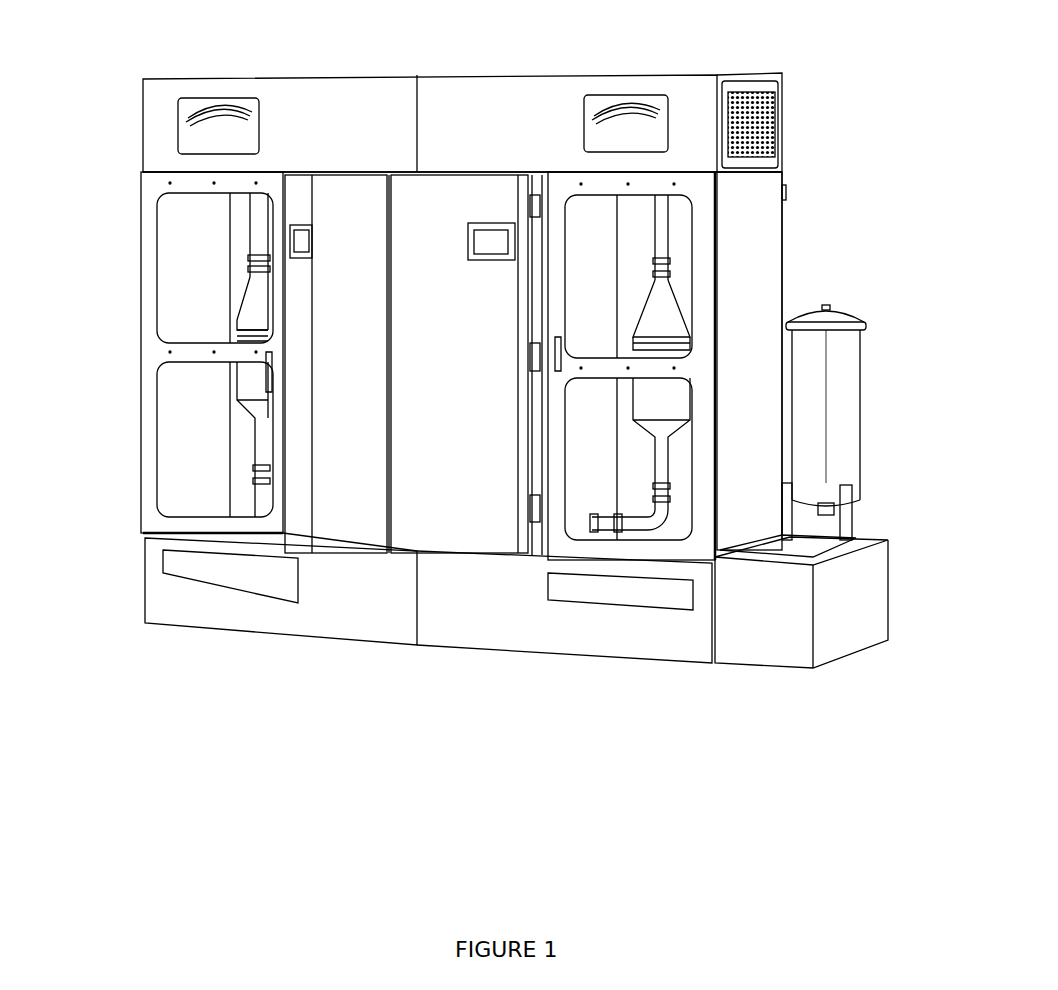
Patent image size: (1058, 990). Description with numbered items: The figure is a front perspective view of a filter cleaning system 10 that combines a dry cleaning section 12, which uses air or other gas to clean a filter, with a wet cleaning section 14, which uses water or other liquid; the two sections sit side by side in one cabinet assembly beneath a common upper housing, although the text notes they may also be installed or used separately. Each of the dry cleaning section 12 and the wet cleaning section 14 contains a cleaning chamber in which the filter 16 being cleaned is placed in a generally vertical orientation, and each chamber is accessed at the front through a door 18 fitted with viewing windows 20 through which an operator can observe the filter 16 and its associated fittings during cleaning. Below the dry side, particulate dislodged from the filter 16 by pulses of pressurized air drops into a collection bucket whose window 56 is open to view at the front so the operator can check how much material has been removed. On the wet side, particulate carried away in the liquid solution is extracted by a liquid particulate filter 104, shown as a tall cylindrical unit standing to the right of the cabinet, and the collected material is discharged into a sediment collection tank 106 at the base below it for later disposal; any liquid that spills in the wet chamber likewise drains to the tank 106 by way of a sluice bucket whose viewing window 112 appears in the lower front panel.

The filter cleaning system 10 is at (122, 68).
The dry cleaning section 12 is at (140, 216).
The wet cleaning section 14 is at (782, 217).
The filter 16 is at (244, 325).
The door 18 is at (168, 356).
The viewing windows 20 is at (172, 268).
The window 56 is at (245, 577).
The liquid particulate filter 104 is at (858, 398).
The sediment collection tank 106 is at (883, 580).
The viewing window 112 is at (625, 593).